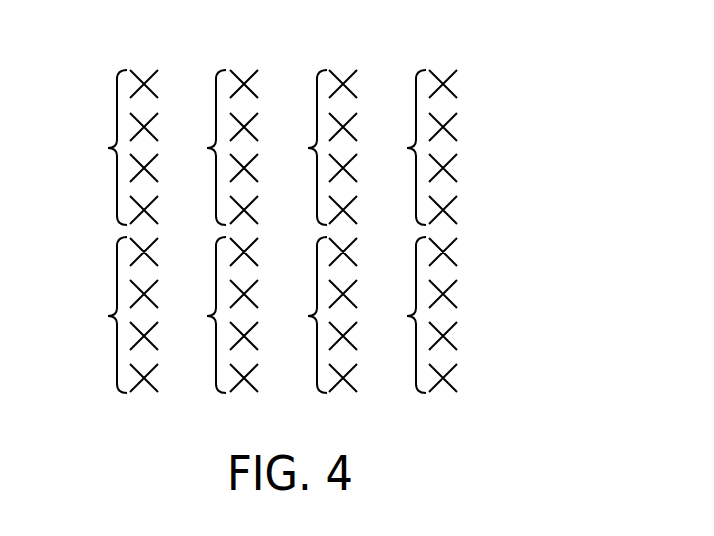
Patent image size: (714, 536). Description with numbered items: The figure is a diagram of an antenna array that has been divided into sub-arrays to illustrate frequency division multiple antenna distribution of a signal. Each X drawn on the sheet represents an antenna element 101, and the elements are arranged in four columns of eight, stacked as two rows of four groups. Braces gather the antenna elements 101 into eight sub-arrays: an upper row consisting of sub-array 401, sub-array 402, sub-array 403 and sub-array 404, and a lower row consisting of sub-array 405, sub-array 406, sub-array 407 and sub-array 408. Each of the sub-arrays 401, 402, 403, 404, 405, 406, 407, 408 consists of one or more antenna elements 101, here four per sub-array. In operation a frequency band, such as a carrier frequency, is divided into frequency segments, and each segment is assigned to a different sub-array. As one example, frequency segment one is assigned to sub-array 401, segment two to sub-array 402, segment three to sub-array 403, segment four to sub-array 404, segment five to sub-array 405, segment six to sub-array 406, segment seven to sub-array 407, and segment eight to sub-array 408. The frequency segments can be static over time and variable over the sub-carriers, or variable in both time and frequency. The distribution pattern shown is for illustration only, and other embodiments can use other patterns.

The antenna element 101 is at (486, 67).
The antenna sub-array 401 is at (111, 147).
The antenna sub-array 402 is at (211, 147).
The antenna sub-array 403 is at (310, 147).
The antenna sub-array 404 is at (410, 147).
The antenna sub-array 405 is at (111, 315).
The antenna sub-array 406 is at (211, 315).
The antenna sub-array 407 is at (310, 315).
The antenna sub-array 408 is at (410, 315).